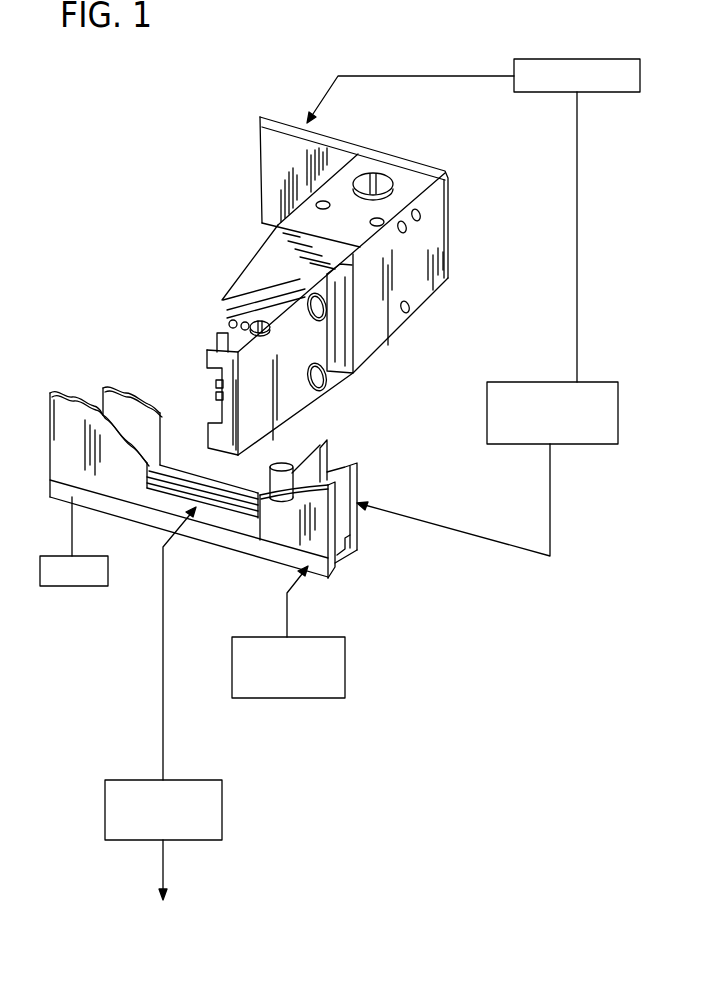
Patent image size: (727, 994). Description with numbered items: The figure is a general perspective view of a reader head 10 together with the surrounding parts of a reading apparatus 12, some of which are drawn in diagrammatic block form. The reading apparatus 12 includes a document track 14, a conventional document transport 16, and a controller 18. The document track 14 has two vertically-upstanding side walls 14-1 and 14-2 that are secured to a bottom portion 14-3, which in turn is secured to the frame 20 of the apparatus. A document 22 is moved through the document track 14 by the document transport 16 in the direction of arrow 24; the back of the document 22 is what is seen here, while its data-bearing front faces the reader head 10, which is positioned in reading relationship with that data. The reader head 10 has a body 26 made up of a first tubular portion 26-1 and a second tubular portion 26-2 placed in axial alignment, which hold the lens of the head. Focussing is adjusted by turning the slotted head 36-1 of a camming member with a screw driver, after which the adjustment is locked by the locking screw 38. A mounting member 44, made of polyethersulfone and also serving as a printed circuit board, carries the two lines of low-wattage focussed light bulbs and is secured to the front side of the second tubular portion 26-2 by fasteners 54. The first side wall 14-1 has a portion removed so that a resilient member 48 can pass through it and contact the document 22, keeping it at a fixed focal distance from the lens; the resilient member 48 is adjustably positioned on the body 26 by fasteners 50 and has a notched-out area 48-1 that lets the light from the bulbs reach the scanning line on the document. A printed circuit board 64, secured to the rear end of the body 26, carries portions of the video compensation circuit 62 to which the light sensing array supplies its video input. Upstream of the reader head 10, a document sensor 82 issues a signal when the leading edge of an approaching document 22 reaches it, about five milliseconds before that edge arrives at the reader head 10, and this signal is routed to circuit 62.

The reader head 10 is at (241, 252).
The reading apparatus 12 is at (137, 585).
The document track 14 is at (345, 660).
The first side wall 14-1 is at (358, 482).
The second side wall 14-2 is at (285, 538).
The bottom portion 14-3 is at (348, 557).
The document transport 16 is at (489, 416).
The controller 18 is at (562, 59).
The frame 20 is at (50, 556).
The document 22 is at (328, 450).
The arrow 24 is at (510, 549).
The body 26 is at (424, 307).
The first tubular portion 26-1 is at (360, 166).
The second tubular portion 26-2 is at (247, 277).
The slotted head 36-1 is at (392, 184).
The locking screw 38 is at (419, 215).
The mounting member 44 is at (226, 310).
The resilient member 48 is at (256, 403).
The notched-out area 48-1 is at (219, 404).
The fasteners 50 is at (327, 368).
The fasteners 54 is at (262, 322).
The video compensation circuit 62 is at (166, 886).
The printed circuit board 64 is at (270, 153).
The document sensor 82 is at (197, 782).